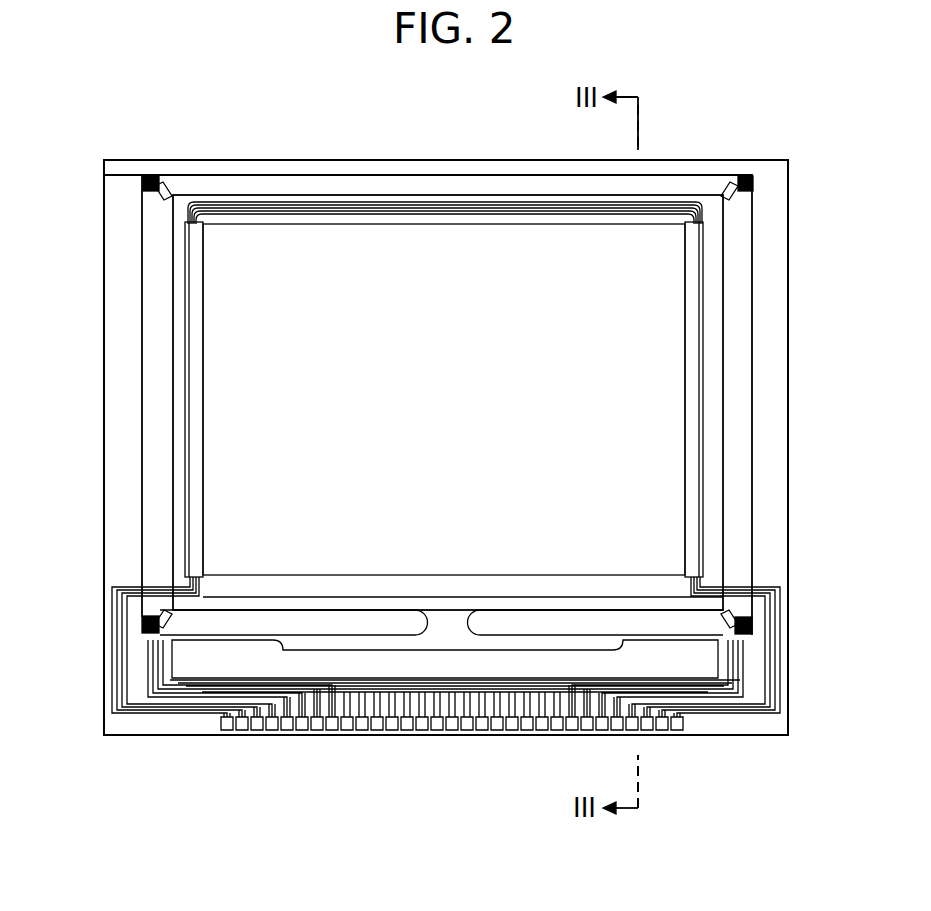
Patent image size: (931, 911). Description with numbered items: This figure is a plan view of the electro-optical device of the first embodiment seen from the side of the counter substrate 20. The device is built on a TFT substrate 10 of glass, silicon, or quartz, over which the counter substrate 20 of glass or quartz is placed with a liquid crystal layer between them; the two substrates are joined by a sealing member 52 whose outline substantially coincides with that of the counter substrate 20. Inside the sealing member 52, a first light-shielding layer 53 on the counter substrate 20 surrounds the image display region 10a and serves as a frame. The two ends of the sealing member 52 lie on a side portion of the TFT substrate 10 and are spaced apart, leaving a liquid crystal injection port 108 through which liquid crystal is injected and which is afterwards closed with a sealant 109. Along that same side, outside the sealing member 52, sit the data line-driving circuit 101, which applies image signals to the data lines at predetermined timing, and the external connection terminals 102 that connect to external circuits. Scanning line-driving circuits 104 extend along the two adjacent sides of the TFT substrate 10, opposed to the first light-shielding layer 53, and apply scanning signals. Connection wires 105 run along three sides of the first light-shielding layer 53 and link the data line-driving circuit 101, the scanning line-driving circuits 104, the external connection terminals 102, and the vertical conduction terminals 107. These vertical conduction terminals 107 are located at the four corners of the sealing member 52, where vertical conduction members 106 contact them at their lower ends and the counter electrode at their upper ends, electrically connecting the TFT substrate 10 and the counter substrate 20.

The TFT substrate 10 is at (260, 160).
The image display region 10a is at (245, 352).
The counter substrate 20 is at (468, 175).
The sealing member 52 is at (740, 332).
The first light-shielding layer 53 is at (240, 585).
The data line-driving circuit 101 is at (197, 663).
The external connection terminals 102 is at (378, 735).
The scanning line-driving circuits 104 is at (196, 295).
The connection wires 105 is at (350, 205).
The vertical conduction members 106 is at (148, 183).
The vertical conduction terminals 107 is at (162, 196).
The liquid crystal injection port 108 is at (478, 633).
The sealant 109 is at (523, 645).